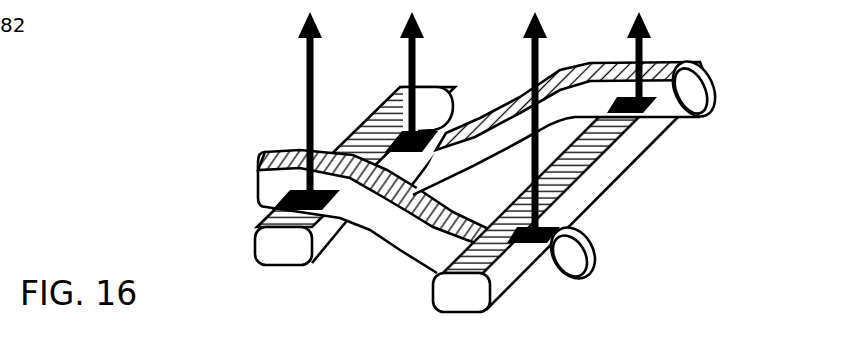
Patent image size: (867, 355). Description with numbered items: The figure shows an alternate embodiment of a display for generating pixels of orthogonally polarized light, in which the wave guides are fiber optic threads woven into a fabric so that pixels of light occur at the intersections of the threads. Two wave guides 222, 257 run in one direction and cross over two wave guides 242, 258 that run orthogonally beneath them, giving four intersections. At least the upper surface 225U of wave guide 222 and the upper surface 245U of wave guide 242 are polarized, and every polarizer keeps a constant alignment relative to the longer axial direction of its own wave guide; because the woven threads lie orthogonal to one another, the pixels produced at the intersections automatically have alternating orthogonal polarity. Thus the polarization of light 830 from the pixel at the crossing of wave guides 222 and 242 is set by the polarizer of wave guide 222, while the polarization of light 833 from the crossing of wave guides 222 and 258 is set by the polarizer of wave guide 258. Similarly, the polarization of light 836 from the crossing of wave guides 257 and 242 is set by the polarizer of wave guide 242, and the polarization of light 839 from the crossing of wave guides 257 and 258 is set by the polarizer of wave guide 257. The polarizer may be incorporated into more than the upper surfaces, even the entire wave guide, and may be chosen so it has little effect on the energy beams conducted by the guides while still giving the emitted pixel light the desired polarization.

The wave guide 222 is at (282, 150).
The wave guide 257 is at (526, 98).
The wave guide 242 is at (263, 223).
The wave guide 258 is at (437, 293).
The upper surface of wave guide 245U is at (280, 237).
The upper surface of wave guide 225U is at (578, 240).
The polarization of light 830 is at (305, 58).
The polarization of light 833 is at (532, 55).
The polarization of light 836 is at (410, 58).
The polarization of light 839 is at (632, 47).